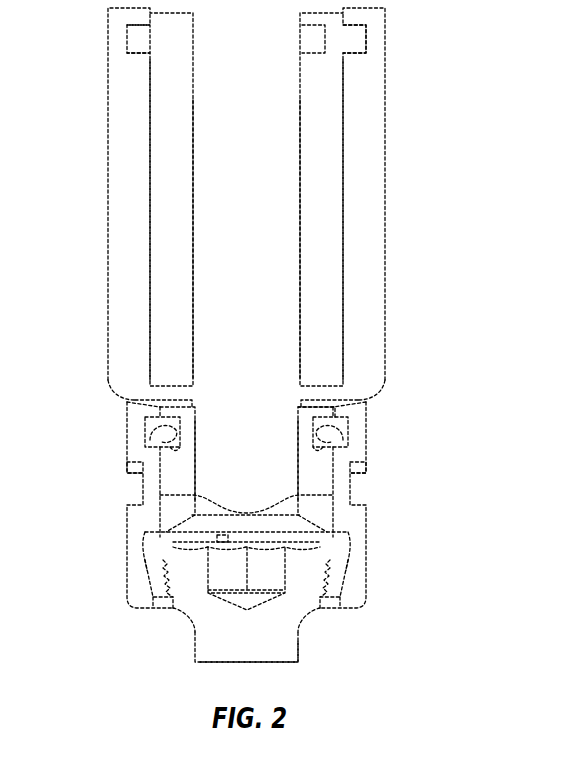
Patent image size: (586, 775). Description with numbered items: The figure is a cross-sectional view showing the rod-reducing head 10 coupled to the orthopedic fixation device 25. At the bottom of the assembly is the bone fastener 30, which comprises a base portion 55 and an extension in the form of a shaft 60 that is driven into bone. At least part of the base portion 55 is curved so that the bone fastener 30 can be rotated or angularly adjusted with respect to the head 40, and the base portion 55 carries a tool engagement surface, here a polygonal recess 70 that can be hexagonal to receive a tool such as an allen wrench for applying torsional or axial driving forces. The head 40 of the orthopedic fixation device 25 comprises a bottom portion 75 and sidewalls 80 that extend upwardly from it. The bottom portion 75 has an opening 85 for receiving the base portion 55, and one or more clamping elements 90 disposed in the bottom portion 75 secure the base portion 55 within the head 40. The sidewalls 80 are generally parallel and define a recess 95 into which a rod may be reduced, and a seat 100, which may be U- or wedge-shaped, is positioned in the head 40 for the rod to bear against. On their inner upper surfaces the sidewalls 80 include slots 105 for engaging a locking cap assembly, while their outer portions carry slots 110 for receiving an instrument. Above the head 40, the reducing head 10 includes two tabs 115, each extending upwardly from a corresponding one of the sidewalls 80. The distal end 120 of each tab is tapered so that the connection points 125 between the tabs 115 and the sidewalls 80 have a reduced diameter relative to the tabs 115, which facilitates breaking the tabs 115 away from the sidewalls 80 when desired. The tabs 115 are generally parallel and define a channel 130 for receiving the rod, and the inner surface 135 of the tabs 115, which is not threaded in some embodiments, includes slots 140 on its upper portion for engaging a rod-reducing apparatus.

The rod-reducing head 10 is at (276, 346).
The orthopedic fixation device 25 is at (277, 534).
The bone fastener 30 is at (300, 652).
The head 40 is at (362, 495).
The base portion 55 is at (327, 613).
The shaft 60 is at (190, 650).
The polygonal recess 70 is at (293, 575).
The bottom portion 75 is at (137, 555).
The sidewalls 80 is at (137, 463).
The opening 85 is at (158, 613).
The clamping elements 90 is at (337, 557).
The recess 95 is at (215, 465).
The seat 100 is at (285, 499).
The slots 105 is at (165, 420).
The slots 110 is at (140, 507).
The tabs 115 is at (127, 227).
The distal end 120 is at (128, 388).
The connection points 125 is at (308, 397).
The channel 130 is at (230, 281).
The inner surface 135 is at (177, 116).
The slots 140 is at (130, 48).